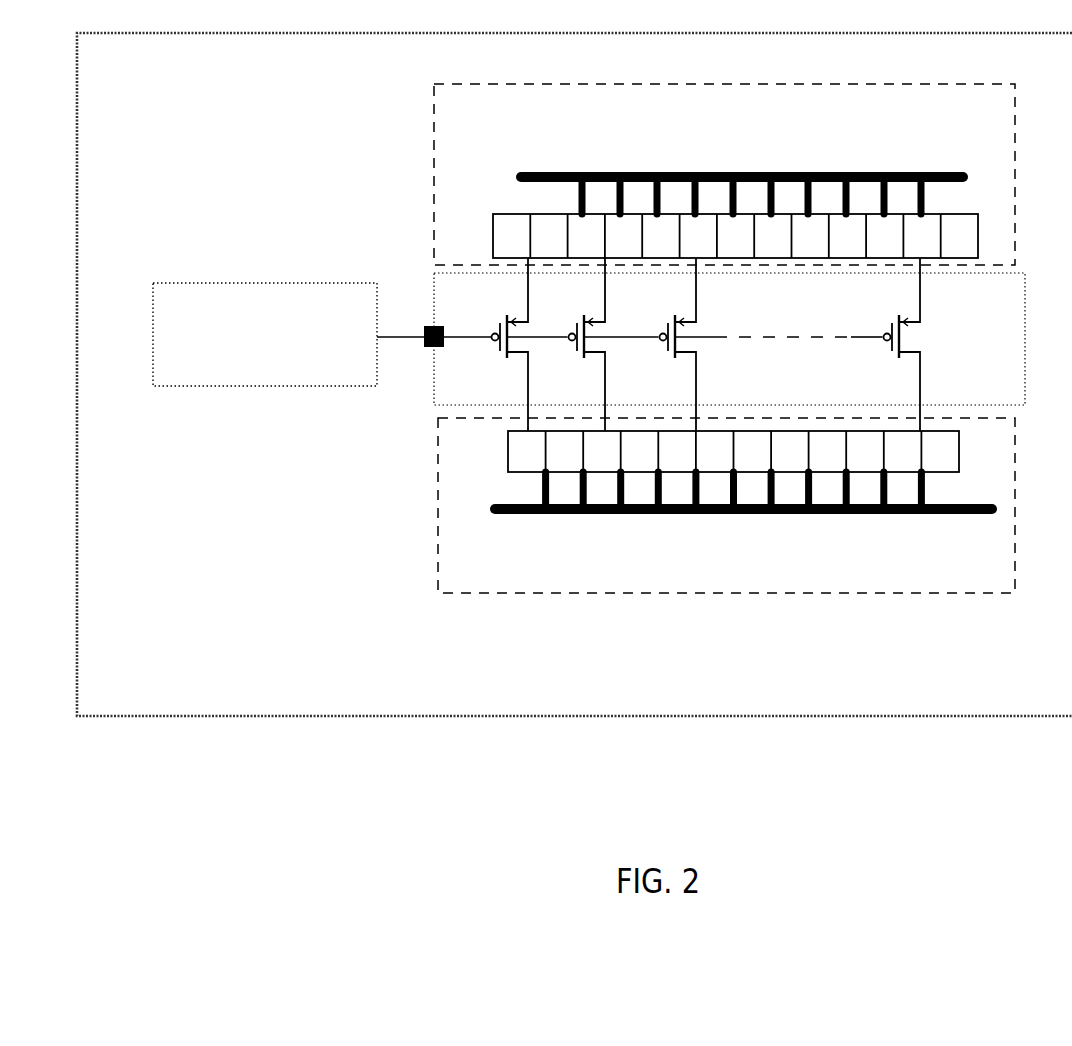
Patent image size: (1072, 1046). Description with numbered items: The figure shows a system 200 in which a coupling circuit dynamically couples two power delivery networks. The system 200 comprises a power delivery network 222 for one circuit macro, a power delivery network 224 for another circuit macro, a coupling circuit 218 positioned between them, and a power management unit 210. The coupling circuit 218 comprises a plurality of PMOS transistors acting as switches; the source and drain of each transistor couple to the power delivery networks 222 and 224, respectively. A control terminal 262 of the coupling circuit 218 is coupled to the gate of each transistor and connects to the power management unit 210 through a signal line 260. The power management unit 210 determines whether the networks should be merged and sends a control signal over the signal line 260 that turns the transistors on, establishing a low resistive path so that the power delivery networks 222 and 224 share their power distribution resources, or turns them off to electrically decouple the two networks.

The system 200 is at (667, 670).
The power management unit 210 is at (247, 376).
The coupling circuit 218 is at (963, 344).
The power delivery network 222 is at (715, 138).
The power delivery network 224 is at (715, 552).
The signal line 260 is at (402, 338).
The control terminal 262 is at (423, 330).